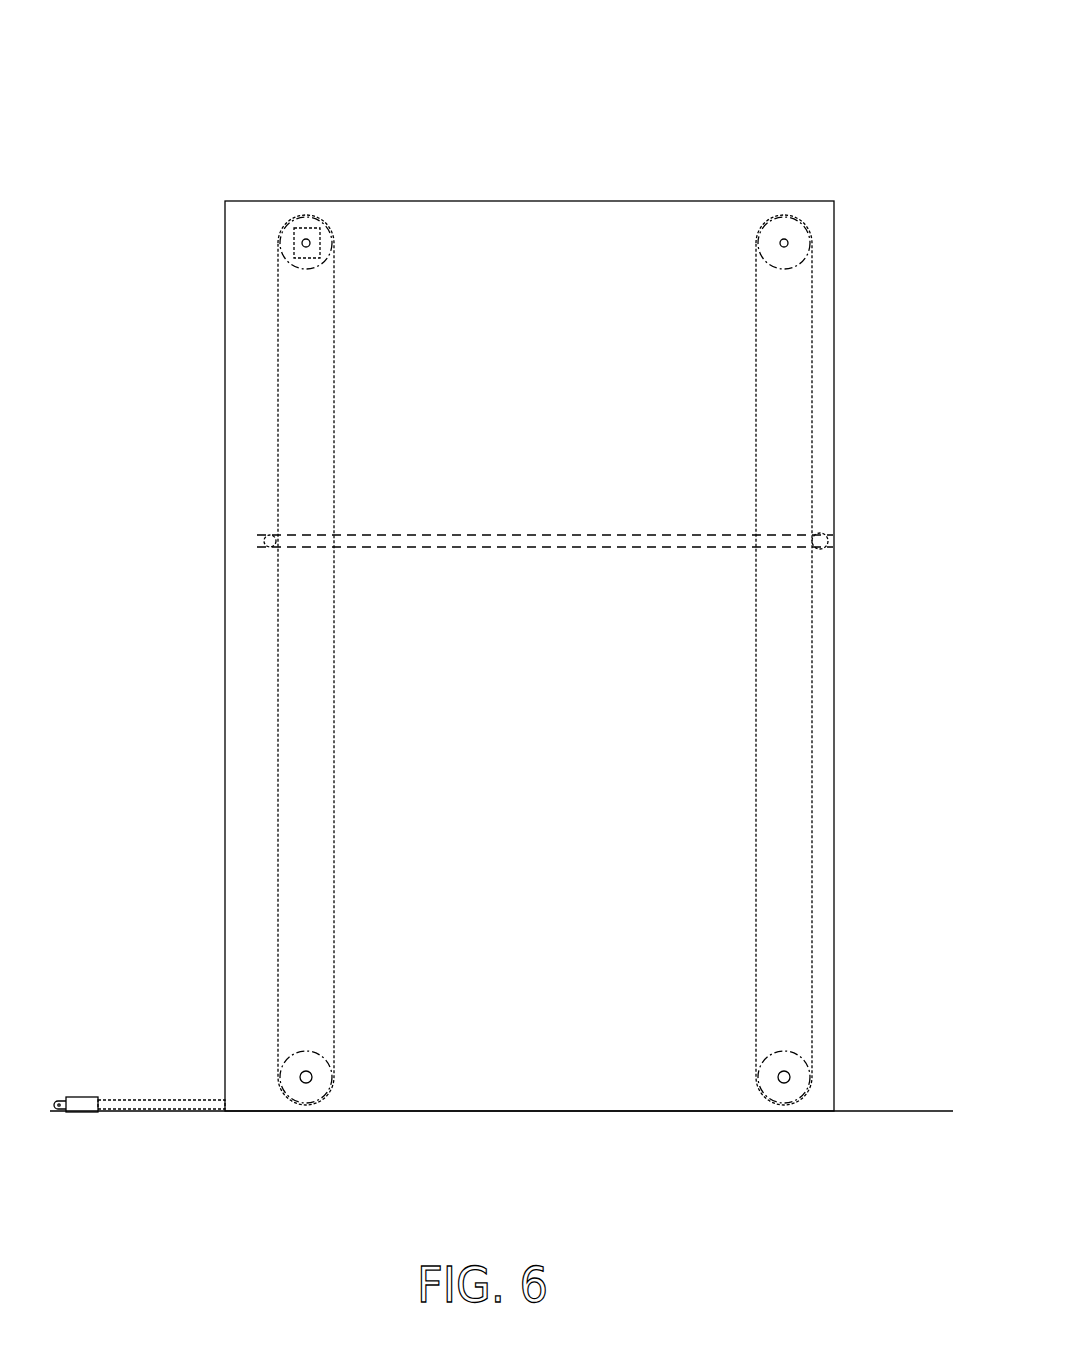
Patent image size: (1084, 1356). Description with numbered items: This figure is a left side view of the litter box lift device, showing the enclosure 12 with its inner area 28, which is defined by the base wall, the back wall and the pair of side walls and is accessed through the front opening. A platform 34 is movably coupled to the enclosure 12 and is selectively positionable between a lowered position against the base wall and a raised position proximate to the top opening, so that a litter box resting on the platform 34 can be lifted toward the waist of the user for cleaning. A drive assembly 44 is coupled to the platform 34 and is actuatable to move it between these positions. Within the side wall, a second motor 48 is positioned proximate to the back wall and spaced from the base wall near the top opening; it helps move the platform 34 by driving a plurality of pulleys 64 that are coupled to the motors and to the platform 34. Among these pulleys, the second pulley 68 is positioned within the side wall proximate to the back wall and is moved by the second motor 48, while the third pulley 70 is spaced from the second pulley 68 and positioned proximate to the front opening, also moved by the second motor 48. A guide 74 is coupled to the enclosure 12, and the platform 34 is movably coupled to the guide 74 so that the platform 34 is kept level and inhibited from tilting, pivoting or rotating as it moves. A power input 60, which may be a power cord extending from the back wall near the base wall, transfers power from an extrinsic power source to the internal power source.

The enclosure 12 is at (485, 559).
The inner area 28 is at (700, 826).
The platform 34 is at (525, 502).
The drive assembly 44 is at (335, 133).
The second motor 48 is at (322, 240).
The power input 60 is at (126, 1102).
The plurality of pulleys 64 is at (481, 605).
The second pulley 68 is at (335, 297).
The third pulley 70 is at (810, 298).
The guide 74 is at (832, 503).